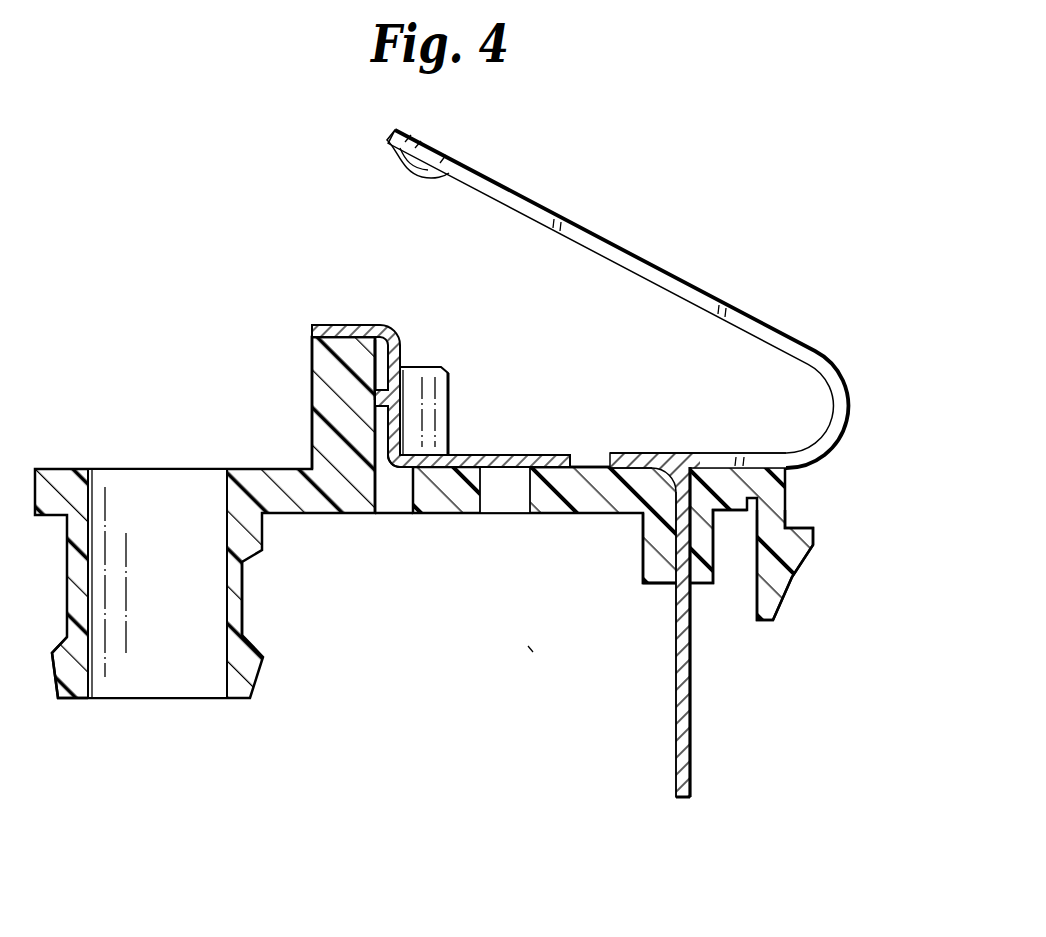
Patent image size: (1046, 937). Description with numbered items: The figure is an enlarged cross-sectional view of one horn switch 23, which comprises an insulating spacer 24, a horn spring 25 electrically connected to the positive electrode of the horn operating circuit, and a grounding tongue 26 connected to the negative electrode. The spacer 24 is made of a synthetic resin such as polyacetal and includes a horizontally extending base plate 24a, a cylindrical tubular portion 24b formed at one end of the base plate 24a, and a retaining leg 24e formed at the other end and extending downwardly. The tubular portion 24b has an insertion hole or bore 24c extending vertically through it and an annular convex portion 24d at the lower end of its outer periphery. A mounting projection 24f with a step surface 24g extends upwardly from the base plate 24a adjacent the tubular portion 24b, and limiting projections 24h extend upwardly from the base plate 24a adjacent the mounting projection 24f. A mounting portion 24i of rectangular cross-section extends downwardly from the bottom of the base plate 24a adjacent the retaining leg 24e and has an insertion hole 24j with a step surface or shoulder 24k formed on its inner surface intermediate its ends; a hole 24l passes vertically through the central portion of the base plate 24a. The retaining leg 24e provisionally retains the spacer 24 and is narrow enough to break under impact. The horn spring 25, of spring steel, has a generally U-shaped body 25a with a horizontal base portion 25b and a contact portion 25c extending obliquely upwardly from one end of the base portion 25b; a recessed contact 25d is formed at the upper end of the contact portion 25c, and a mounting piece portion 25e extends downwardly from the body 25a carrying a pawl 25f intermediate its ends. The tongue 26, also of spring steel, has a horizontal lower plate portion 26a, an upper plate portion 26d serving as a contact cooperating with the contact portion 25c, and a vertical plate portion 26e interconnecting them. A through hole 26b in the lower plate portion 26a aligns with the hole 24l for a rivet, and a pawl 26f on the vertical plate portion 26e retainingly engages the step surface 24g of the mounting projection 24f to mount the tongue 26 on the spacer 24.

The horn switch 23 is at (166, 187).
The spacer 24 is at (455, 510).
The base plate 24a is at (557, 502).
The cylindrical tubular portion 24b is at (240, 609).
The insertion hole or bore 24c is at (186, 687).
The annular convex portion 24d is at (82, 690).
The retaining leg 24e is at (783, 588).
The mounting projection 24f is at (318, 355).
The step surface 24g is at (378, 392).
The limiting projection 24h is at (448, 387).
The mounting portion 24i is at (657, 573).
The insertion hole 24j is at (683, 510).
The step surface or shoulder 24k is at (713, 517).
The hole 24l is at (503, 502).
The horn spring 25 is at (627, 464).
The body 25a is at (663, 345).
The base portion 25b is at (688, 457).
The contact portion 25c is at (690, 300).
The contact 25d is at (407, 162).
The mounting piece portion 25e is at (677, 772).
The pawl 25f is at (693, 530).
The tongue 26 is at (416, 410).
The lower plate portion 26a is at (433, 470).
The through hole 26b is at (515, 455).
The upper plate portion 26d is at (330, 333).
The vertical plate portion 26e is at (406, 372).
The pawl 26f is at (375, 398).